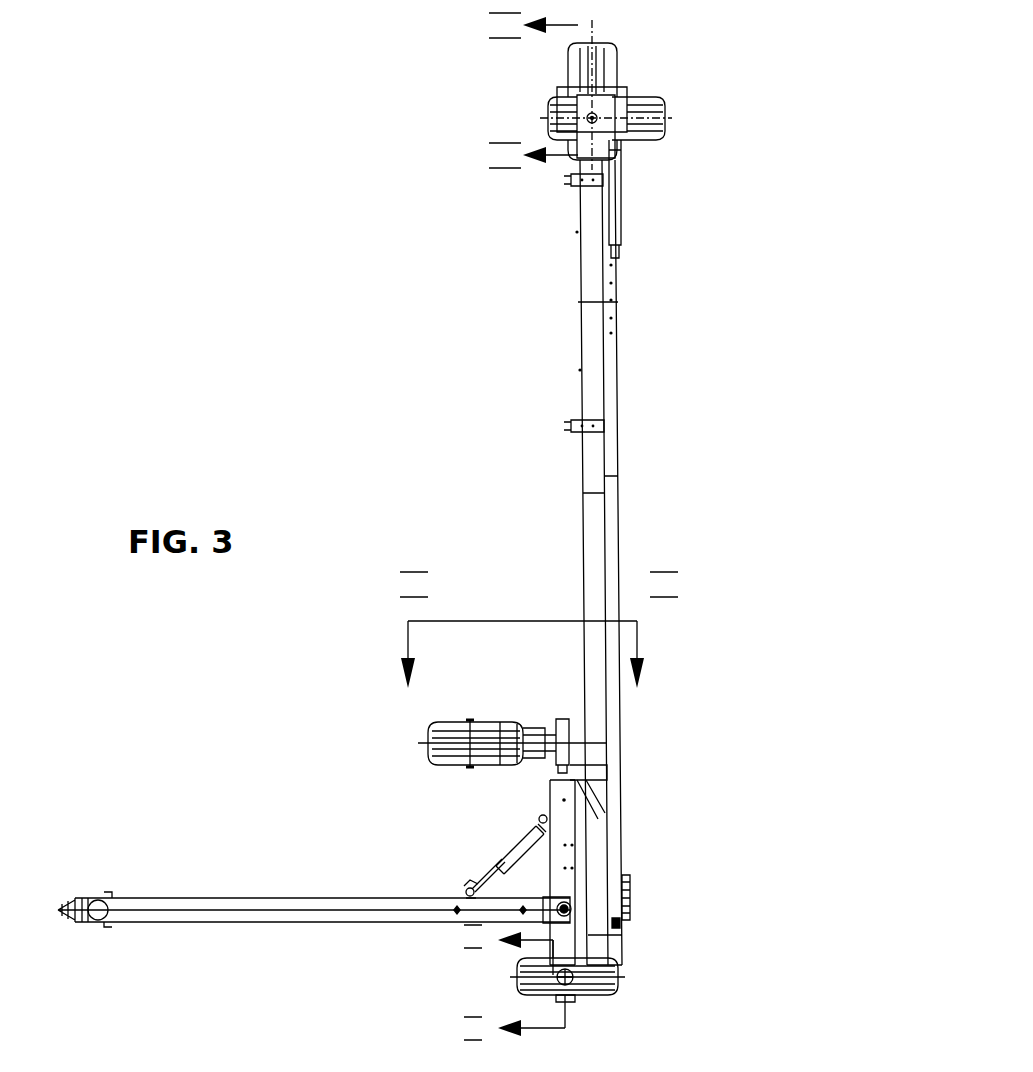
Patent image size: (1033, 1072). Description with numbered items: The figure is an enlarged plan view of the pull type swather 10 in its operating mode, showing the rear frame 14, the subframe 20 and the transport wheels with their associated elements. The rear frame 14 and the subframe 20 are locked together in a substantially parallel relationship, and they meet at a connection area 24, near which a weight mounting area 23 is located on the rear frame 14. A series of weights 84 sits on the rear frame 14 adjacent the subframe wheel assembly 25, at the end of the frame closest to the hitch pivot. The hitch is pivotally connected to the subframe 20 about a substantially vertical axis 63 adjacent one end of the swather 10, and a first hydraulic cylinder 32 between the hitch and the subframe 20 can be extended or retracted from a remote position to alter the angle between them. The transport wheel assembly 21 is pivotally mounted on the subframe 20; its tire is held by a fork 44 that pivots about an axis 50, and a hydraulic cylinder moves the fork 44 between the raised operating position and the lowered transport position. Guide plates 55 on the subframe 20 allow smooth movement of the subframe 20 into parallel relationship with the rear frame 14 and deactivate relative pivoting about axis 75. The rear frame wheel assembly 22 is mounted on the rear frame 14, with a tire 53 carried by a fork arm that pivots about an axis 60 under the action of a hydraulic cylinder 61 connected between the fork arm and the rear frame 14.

The pull type swather 10 is at (419, 529).
The rear frame 14 is at (620, 528).
The subframe 20 is at (548, 791).
The transport wheel assembly 21 is at (390, 695).
The rear frame wheel assembly 22 is at (668, 170).
The weight mounting area 23 is at (645, 863).
The connection area 24 is at (640, 998).
The subframe wheel assembly 25 is at (585, 1010).
The first hydraulic cylinder 32 is at (500, 862).
The fork 44 is at (497, 717).
The axis 50 is at (606, 745).
The tire 53 is at (662, 110).
The guide plates 55 is at (600, 819).
The axis 60 is at (596, 114).
The hydraulic cylinder 61 is at (621, 205).
The vertical axis 63 is at (569, 909).
The axis 75 is at (572, 976).
The weights 84 is at (632, 890).